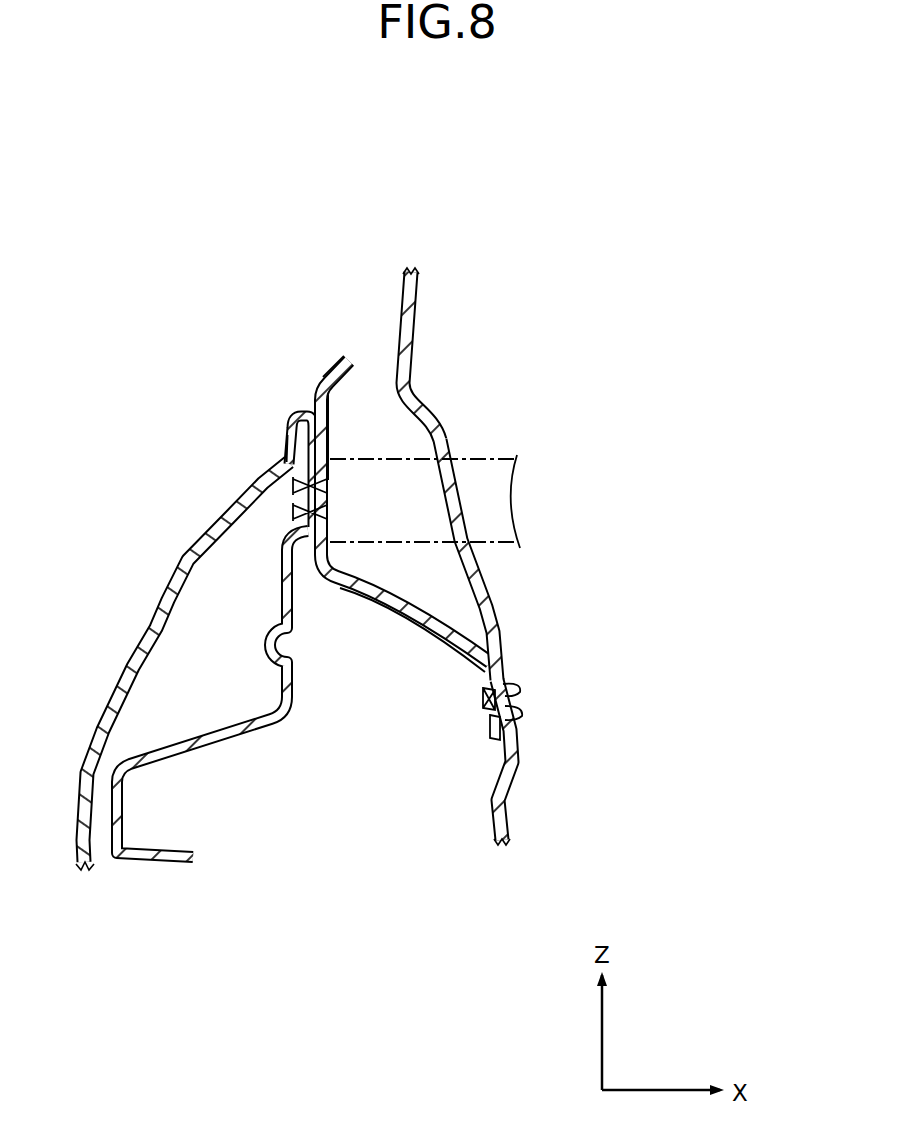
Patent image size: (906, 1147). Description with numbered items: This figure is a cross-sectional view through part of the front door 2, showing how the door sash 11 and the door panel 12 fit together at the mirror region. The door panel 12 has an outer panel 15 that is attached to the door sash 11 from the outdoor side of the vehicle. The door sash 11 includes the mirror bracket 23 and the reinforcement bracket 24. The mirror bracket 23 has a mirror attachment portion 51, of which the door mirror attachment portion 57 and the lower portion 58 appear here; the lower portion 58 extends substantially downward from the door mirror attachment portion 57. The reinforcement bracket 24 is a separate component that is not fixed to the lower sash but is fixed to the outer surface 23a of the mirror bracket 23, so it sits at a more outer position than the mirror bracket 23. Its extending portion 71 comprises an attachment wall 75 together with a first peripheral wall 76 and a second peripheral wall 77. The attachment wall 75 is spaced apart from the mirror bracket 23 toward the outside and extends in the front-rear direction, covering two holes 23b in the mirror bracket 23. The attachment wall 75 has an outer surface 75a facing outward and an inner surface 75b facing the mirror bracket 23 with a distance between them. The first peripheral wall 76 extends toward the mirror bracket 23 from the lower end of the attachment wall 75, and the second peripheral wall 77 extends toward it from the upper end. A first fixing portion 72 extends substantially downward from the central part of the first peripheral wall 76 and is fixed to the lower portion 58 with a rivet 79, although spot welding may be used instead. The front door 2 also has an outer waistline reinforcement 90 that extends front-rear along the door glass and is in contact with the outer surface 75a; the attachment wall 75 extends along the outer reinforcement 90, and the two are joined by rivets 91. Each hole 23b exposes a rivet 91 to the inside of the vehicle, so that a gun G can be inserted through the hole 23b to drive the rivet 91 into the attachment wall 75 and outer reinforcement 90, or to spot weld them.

The front door 2 is at (136, 306).
The door sash 11 is at (535, 259).
The door panel 12 is at (192, 638).
The outer panel 15 is at (147, 626).
The mirror bracket 23 is at (437, 538).
The outer surface 23a is at (490, 773).
The hole 23b is at (456, 450).
The reinforcement bracket 24 is at (357, 490).
The mirror attachment portion 51 is at (420, 292).
The door mirror attachment portion 57 is at (397, 316).
The lower portion 58 is at (508, 820).
The extending portion 71 is at (357, 496).
The first fixing portion 72 is at (488, 733).
The attachment wall 75 is at (302, 428).
The outer surface 75a is at (312, 450).
The inner surface 75b is at (329, 402).
The first peripheral wall 76 is at (392, 614).
The second peripheral wall 77 is at (319, 360).
The rivet 79 is at (482, 707).
The outer waistline reinforcement 90 is at (250, 738).
The rivet 91 is at (330, 505).
The gun G is at (506, 552).